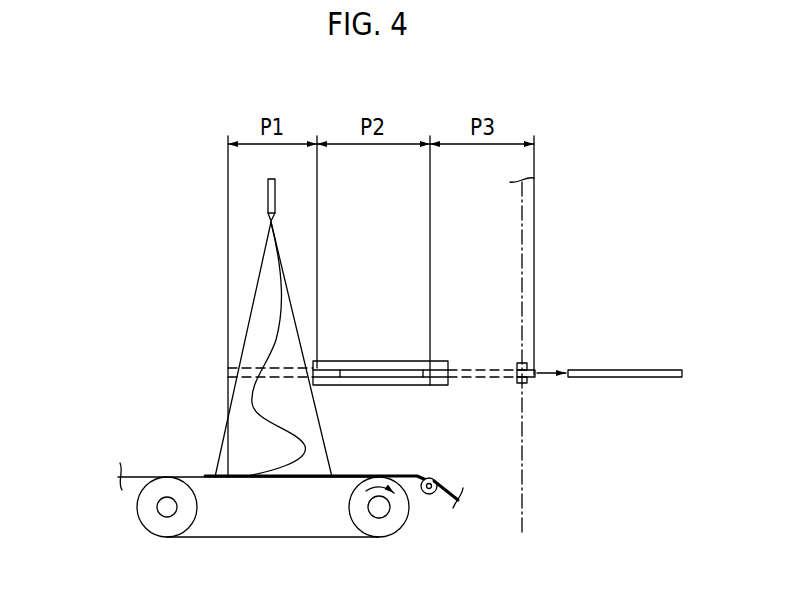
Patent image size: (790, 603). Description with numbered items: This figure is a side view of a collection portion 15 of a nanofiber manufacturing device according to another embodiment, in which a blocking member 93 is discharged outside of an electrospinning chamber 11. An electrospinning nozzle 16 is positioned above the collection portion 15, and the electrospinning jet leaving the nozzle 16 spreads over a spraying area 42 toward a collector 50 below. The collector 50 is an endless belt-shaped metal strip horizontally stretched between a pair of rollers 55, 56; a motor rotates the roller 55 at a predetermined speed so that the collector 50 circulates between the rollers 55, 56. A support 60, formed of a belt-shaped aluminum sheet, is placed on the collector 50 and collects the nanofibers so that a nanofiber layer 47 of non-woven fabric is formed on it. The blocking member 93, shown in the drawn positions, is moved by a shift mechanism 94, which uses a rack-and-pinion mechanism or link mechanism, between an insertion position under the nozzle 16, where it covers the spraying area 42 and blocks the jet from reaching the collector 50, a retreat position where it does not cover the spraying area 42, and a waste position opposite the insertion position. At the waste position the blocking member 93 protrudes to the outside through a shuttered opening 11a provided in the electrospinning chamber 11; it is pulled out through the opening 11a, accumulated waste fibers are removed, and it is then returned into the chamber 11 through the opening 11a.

The electrospinning chamber 11 is at (521, 248).
The opening 11a is at (533, 363).
The collection portion 15 is at (227, 257).
The electrospinning nozzle 16 is at (279, 195).
The spraying area 42 is at (243, 343).
The nanofiber layer 47 is at (430, 457).
The collector 50 is at (327, 480).
The roller 55 is at (353, 512).
The roller 56 is at (193, 513).
The support 60 is at (138, 477).
The blocking member 93 is at (638, 343).
The shift mechanism 94 is at (377, 368).